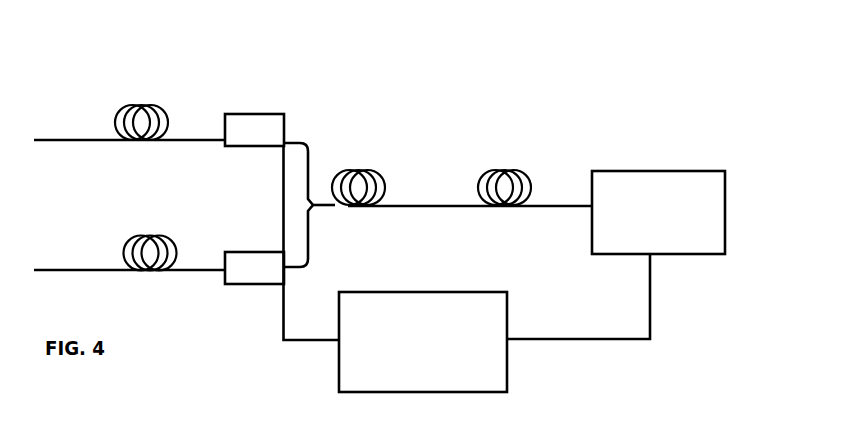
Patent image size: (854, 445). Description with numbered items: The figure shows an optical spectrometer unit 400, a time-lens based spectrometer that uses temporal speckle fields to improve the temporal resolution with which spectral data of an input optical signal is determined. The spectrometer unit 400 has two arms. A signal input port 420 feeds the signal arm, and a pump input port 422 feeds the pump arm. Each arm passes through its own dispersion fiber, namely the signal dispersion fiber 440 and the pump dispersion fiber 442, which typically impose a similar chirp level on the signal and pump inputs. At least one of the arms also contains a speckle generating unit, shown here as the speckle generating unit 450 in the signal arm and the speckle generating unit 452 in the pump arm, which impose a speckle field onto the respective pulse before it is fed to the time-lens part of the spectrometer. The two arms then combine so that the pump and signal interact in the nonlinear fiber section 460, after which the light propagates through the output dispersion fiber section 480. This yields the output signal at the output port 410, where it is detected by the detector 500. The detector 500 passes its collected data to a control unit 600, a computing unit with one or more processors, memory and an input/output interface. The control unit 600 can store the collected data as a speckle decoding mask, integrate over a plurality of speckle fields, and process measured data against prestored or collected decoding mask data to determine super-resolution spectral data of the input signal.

The optical spectrometer unit 400 is at (440, 115).
The output port 410 is at (577, 208).
The signal input port 420 is at (51, 139).
The pump input port 422 is at (45, 270).
The signal dispersion fiber 440 is at (138, 105).
The pump dispersion fiber 442 is at (143, 237).
The speckle generating unit 450 is at (254, 114).
The speckle generating unit 452 is at (273, 252).
The nonlinear fiber section 460 is at (368, 155).
The output dispersion fiber section 480 is at (507, 170).
The detector 500 is at (658, 212).
The control unit 600 is at (467, 269).